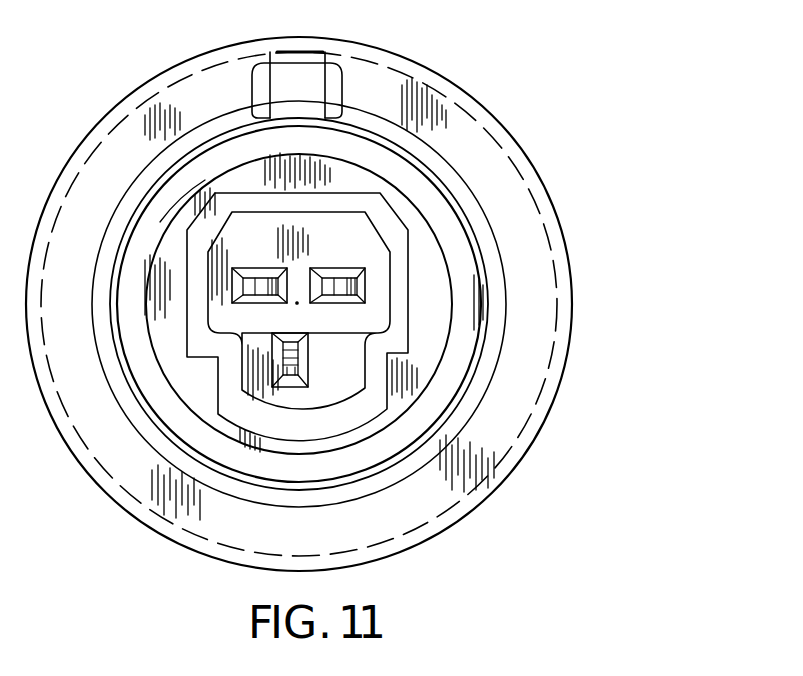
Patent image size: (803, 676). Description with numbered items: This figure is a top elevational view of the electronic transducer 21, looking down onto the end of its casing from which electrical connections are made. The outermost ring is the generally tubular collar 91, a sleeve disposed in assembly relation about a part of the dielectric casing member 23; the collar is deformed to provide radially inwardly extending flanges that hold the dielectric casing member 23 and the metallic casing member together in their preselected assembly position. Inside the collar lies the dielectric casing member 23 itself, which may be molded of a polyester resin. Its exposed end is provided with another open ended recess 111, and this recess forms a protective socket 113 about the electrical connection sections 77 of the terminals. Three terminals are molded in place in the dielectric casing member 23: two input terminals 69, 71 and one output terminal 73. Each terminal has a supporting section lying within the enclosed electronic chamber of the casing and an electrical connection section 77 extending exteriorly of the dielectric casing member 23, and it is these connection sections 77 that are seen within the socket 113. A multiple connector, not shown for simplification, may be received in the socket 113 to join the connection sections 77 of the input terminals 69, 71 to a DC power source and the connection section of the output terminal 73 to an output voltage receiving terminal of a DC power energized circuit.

The electronic transducer 21 is at (508, 65).
The collar 91 is at (526, 153).
The dielectric casing member 23 is at (480, 227).
The open ended recess 111 is at (450, 322).
The protective socket 113 is at (450, 392).
The input terminal 69 is at (262, 282).
The input terminal 71 is at (340, 284).
The output terminal 73 is at (298, 357).
The electrical connection section 77 is at (278, 297).